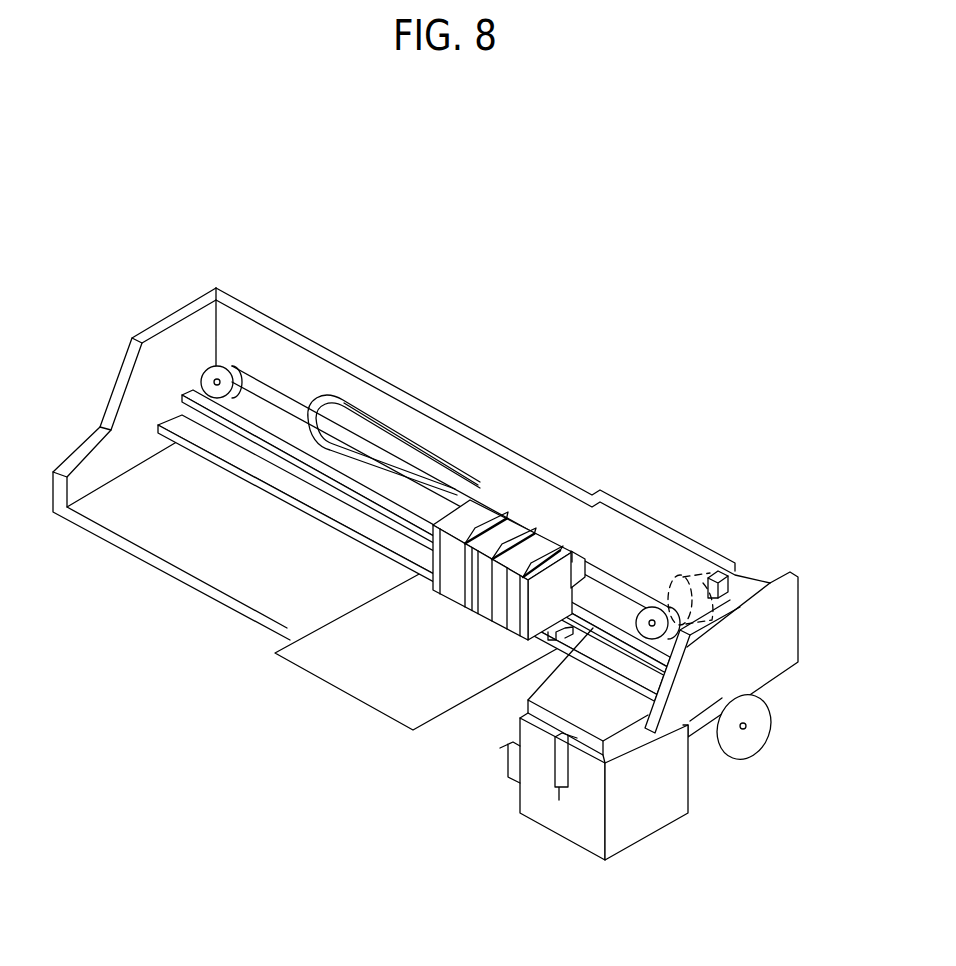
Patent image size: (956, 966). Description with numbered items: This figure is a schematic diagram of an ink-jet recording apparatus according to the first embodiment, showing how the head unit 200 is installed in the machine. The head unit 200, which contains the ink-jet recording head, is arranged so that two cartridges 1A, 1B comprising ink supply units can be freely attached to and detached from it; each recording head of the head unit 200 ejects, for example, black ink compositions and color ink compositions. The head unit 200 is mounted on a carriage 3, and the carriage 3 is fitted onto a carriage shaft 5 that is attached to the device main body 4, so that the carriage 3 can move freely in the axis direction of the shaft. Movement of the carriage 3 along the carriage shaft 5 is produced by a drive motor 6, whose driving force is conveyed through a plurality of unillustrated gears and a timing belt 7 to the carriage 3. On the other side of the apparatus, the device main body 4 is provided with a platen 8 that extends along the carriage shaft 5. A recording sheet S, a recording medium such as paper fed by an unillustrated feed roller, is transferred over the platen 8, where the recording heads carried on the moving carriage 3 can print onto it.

The cartridge 1A is at (453, 577).
The cartridge 1B is at (500, 602).
The head unit 200 is at (556, 637).
The carriage 3 is at (478, 703).
The device main body 4 is at (245, 310).
The carriage shaft 5 is at (198, 390).
The drive motor 6 is at (737, 587).
The timing belt 7 is at (264, 390).
The platen 8 is at (172, 413).
The recording sheet S is at (327, 650).